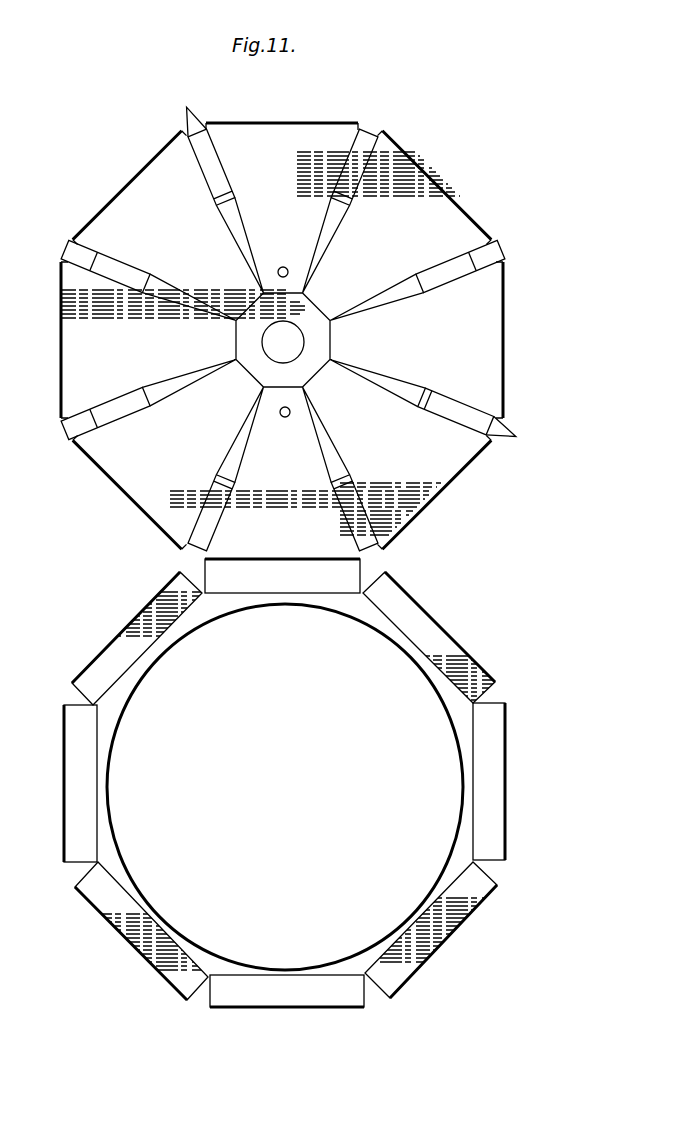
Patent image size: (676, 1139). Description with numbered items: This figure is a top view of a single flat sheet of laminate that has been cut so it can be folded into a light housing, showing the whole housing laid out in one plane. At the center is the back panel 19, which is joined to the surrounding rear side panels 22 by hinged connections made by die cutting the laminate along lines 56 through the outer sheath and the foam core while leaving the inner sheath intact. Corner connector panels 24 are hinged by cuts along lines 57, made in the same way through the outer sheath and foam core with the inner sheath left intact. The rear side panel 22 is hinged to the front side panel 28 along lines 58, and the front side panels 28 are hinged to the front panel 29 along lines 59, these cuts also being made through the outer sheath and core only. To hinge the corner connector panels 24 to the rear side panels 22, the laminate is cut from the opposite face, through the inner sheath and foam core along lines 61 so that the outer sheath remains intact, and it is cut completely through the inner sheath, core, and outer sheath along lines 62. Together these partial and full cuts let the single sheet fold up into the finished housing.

The back panel 19 is at (322, 346).
The rear side panel 22 is at (445, 222).
The corner connector panel 24 is at (497, 410).
The front side panel 28 is at (440, 648).
The front panel 29 is at (112, 714).
The line 56 is at (320, 300).
The line 57 is at (105, 262).
The line 58 is at (310, 545).
The line 59 is at (108, 778).
The line 61 is at (225, 168).
The line 62 is at (190, 115).